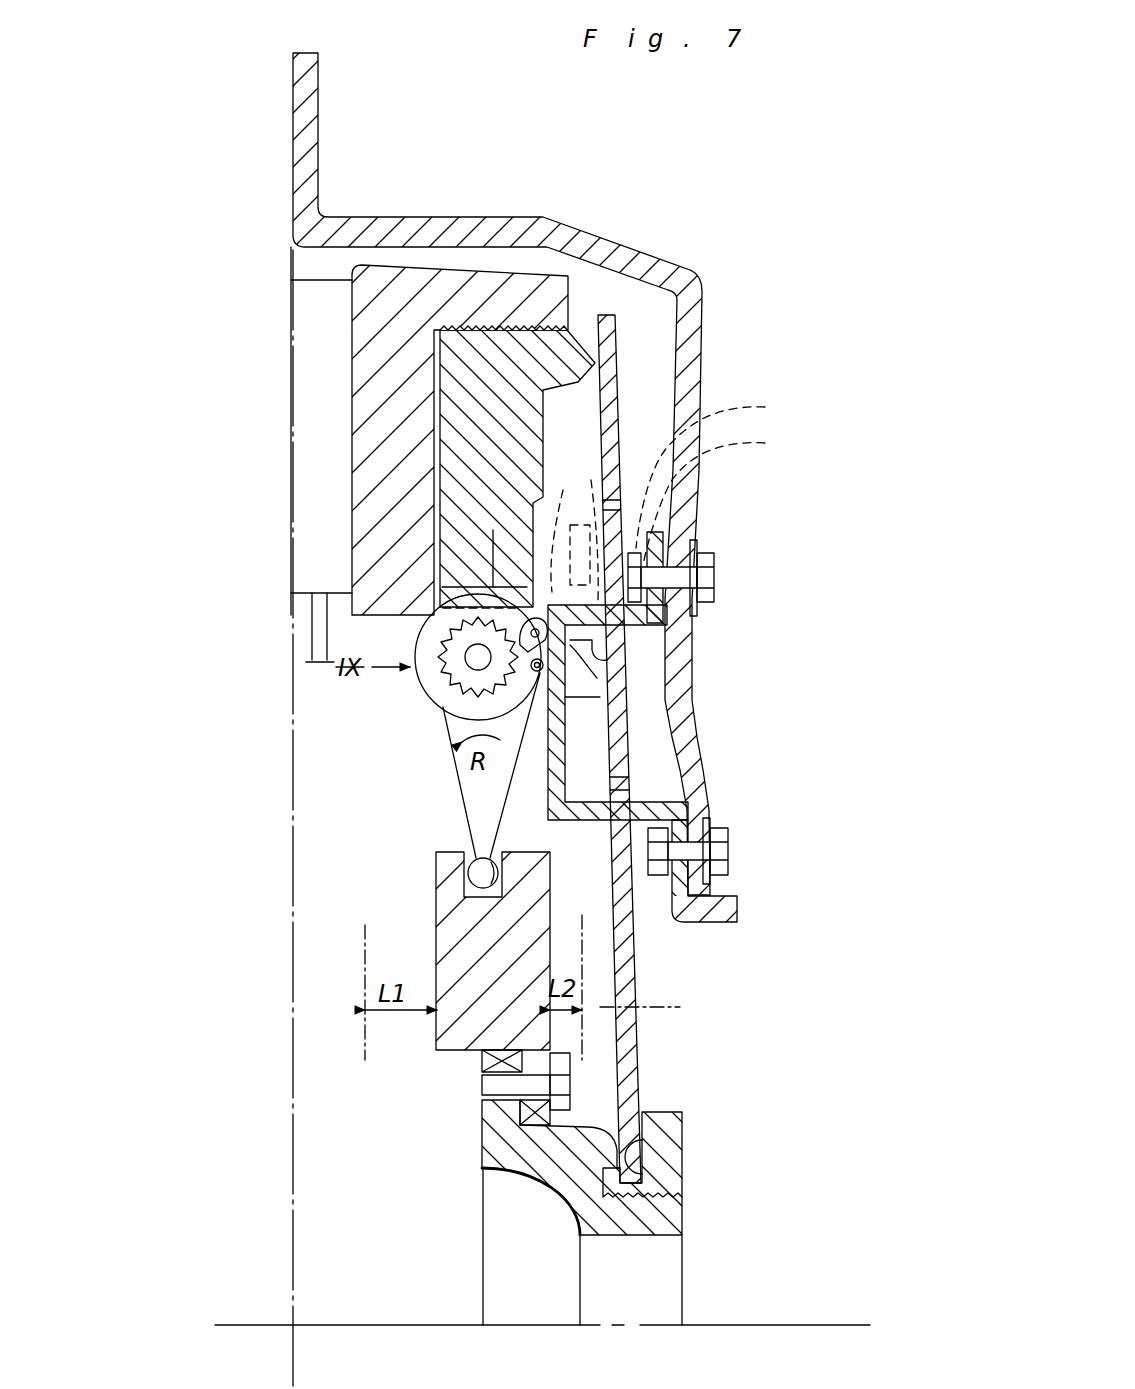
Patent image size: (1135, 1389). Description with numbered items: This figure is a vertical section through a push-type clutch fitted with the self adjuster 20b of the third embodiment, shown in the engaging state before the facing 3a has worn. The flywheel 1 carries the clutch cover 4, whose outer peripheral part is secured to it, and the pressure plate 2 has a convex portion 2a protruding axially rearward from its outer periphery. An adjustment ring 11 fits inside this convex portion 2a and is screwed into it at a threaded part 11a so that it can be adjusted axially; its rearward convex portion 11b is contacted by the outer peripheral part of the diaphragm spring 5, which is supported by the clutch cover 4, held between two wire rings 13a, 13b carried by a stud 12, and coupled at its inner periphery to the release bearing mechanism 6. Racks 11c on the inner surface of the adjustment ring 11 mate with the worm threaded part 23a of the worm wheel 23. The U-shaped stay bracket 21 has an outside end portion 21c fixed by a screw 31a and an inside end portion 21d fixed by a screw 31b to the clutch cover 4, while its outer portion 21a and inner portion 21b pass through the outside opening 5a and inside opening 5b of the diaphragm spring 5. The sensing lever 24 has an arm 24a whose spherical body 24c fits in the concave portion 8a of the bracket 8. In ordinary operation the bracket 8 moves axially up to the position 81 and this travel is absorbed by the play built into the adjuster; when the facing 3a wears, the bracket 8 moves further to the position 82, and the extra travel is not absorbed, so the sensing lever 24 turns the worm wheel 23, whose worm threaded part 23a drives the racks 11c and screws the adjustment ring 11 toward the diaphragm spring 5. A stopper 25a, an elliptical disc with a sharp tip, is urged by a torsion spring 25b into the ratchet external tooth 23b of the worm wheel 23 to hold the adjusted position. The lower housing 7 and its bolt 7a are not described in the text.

The flywheel 1 is at (264, 382).
The pressure plate 2 is at (392, 280).
The convex portion 2a is at (541, 293).
The facing 3a is at (300, 306).
The clutch cover 4 is at (468, 228).
The diaphragm spring 5 is at (641, 958).
The outside opening 5a is at (610, 640).
The inside opening 5b is at (628, 785).
The release bearing mechanism 6 is at (690, 1192).
The bearing holder 7 is at (482, 1142).
The holder bolt 7a is at (572, 1084).
The bracket 8 is at (447, 1053).
The concave portion 8a is at (500, 905).
The adjustment ring 11 is at (548, 410).
The threaded part 11a is at (562, 320).
The convex portion 11b is at (620, 362).
The racks 11c is at (493, 530).
The stud 12 is at (574, 530).
The wire ring 13a is at (726, 471).
The wire ring 13b is at (730, 497).
The self adjuster 20b is at (422, 737).
The stay bracket 21 is at (573, 740).
The outer portion 21a is at (662, 660).
The inner portion 21b is at (666, 805).
The outside end portion 21c is at (655, 545).
The inside end portion 21d is at (705, 922).
The worm wheel 23 is at (415, 700).
The worm threaded part 23a is at (522, 618).
The ratchet external tooth 23b is at (490, 585).
The sensing lever 24 is at (455, 758).
The arm 24a is at (460, 800).
The spherical body 24c is at (482, 870).
The stopper 25a is at (600, 650).
The torsion spring 25b is at (580, 697).
The screw 31a is at (709, 583).
The screw 31b is at (732, 849).
The position 81 is at (365, 1015).
The position 82 is at (690, 1010).